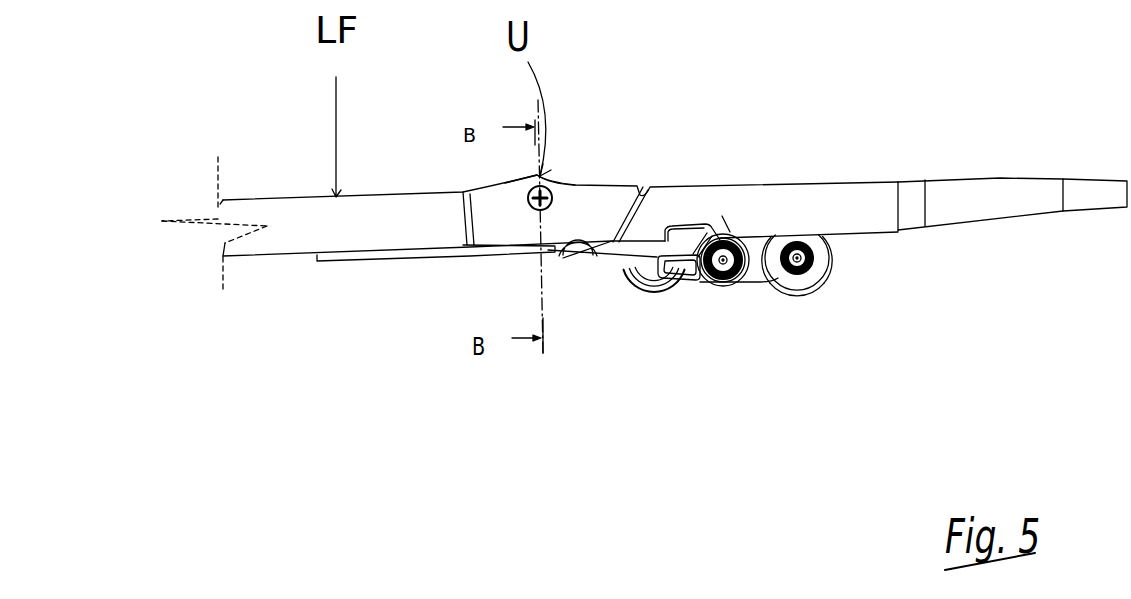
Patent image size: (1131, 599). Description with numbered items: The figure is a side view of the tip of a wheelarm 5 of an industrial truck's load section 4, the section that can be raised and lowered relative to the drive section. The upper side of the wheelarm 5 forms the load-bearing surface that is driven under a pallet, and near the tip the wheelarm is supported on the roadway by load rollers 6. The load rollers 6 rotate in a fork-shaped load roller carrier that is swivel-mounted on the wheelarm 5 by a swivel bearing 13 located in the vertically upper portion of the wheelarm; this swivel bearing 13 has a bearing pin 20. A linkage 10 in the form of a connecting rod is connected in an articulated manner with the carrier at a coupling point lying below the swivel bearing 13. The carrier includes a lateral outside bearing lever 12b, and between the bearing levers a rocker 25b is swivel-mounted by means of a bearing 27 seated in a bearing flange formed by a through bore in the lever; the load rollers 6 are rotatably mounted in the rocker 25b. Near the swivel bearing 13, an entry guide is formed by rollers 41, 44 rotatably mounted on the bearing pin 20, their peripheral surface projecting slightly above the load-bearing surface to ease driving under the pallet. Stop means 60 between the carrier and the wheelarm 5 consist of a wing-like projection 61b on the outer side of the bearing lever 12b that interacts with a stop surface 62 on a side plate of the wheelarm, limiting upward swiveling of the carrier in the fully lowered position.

The load section 4 is at (1066, 116).
The wheelarm 5 is at (278, 208).
The linkage 10 is at (353, 260).
The bearing lever 12b is at (637, 247).
The swivel bearing 13 is at (547, 176).
The bearing pin 20 is at (568, 111).
The roller 41 is at (456, 149).
The roller 44 is at (537, 175).
The load roller 6 is at (627, 287).
The bearing 27 is at (723, 272).
The rocker 25b is at (764, 258).
The stop means 60 is at (722, 216).
The wing-like projection 61b is at (679, 272).
The stop surface 62 is at (692, 226).